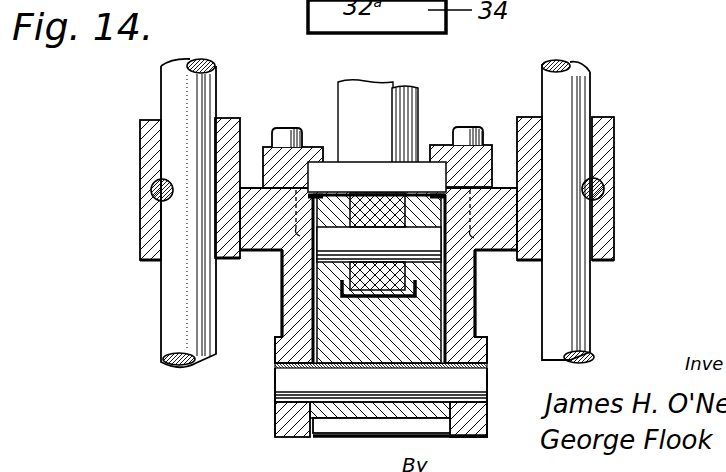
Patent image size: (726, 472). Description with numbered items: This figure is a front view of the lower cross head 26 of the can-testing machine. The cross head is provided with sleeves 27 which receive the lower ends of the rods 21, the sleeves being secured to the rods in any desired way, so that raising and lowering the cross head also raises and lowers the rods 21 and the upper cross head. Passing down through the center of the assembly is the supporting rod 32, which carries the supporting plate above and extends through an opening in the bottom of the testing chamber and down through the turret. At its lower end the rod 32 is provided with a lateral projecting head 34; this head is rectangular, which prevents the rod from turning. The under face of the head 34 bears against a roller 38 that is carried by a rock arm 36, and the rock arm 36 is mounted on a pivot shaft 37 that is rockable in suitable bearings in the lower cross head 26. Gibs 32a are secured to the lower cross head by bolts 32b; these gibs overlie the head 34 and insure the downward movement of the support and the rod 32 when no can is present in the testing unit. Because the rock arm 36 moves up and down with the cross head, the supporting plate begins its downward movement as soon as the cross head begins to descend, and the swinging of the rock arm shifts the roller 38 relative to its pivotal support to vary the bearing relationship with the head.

The shaft 21 is at (182, 93).
The sleeve 27 is at (150, 155).
The lower cross head 26 is at (263, 233).
The supporting rod 32 is at (372, 98).
The gib 32a is at (312, 147).
The bolt 32b is at (281, 128).
The lateral projecting head 34 is at (348, 170).
The rock arm 36 is at (353, 337).
The pivot shaft 37 is at (303, 380).
The roller 38 is at (384, 154).